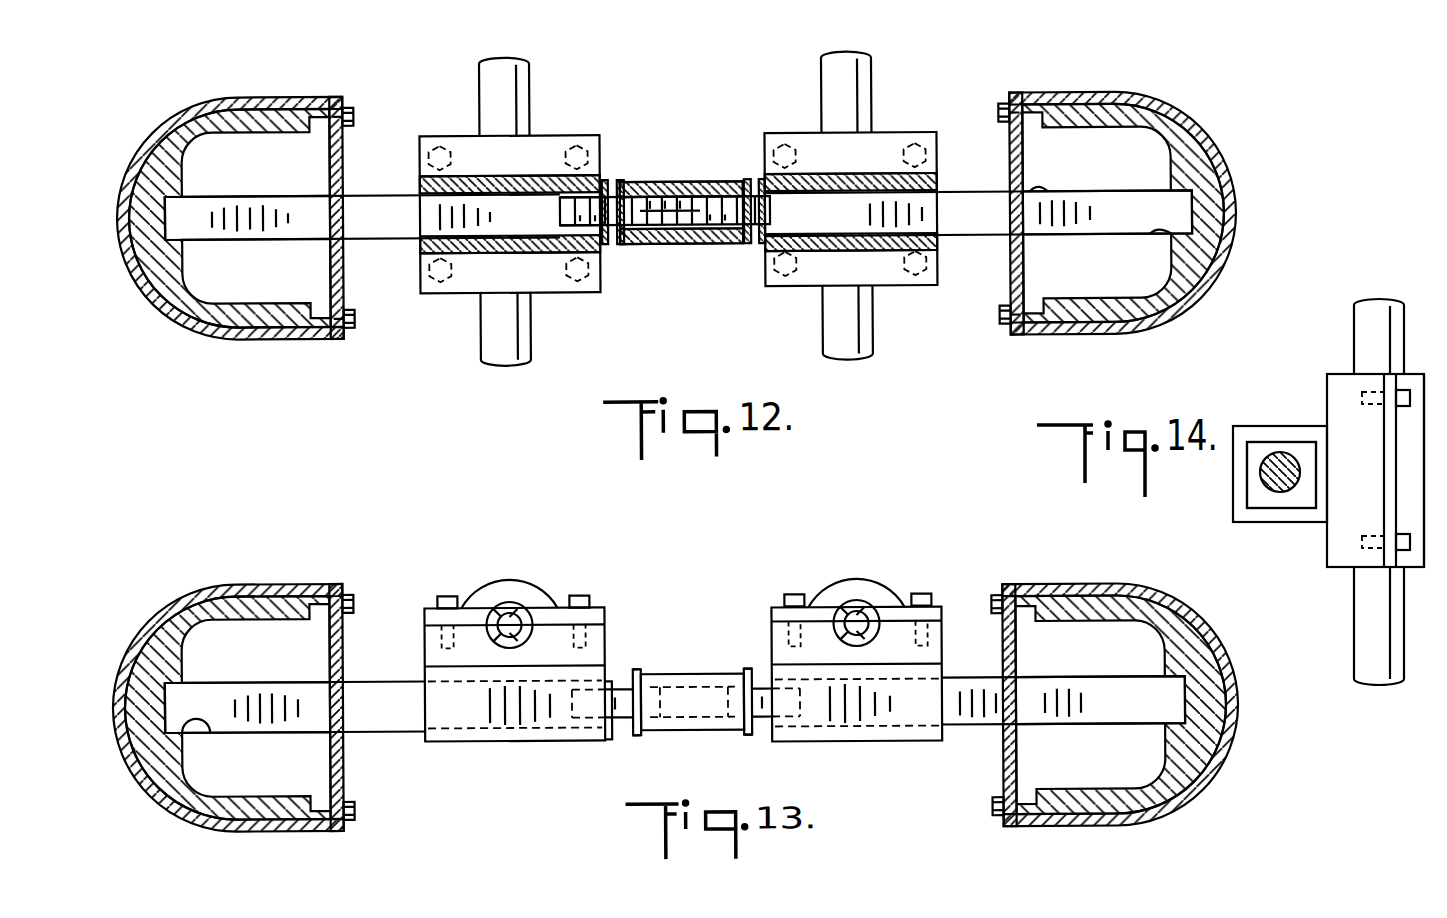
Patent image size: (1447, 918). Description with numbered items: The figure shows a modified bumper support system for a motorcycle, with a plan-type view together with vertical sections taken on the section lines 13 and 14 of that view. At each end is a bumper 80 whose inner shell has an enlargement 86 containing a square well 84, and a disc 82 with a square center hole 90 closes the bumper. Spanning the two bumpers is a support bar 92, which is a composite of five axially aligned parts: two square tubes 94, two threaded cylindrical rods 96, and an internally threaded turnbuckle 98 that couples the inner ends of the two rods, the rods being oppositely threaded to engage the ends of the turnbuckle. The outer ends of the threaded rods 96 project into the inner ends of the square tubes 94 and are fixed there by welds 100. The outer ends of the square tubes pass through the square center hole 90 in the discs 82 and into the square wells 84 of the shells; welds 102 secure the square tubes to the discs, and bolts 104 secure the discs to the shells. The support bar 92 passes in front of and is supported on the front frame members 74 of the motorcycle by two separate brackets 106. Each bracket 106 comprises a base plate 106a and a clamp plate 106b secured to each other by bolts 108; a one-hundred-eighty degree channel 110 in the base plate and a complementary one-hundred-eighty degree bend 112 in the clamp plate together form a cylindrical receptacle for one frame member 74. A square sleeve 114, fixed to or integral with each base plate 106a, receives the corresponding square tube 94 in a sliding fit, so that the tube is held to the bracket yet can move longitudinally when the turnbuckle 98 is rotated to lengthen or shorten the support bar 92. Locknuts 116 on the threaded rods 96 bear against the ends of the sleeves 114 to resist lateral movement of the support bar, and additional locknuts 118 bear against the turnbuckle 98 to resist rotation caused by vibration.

In FIG. 12, the section line 13— 13 is at (85, 258).
In FIG. 12, the section line 14— 14 is at (600, 65).
In FIG. 12, the front frame members 74 is at (487, 87).
In FIG. 13, the front frame members 74 is at (516, 626).
In FIG. 14, the front frame members 74 is at (1379, 492).
In FIG. 12, the bumpers 80 is at (1163, 320).
In FIG. 13, the bumpers 80 is at (158, 616).
In FIG. 12, the discs 82 is at (1006, 145).
In FIG. 12, the well 84 is at (1152, 241).
In FIG. 13, the well 84 is at (216, 724).
In FIG. 12, the enlargement 86 is at (1205, 267).
In FIG. 12, the center hole 90 is at (1040, 203).
In FIG. 12, the support bar 92 is at (982, 253).
In FIG. 13, the support bar 92 is at (965, 742).
In FIG. 12, the square tubes 94 is at (978, 205).
In FIG. 13, the square tubes 94 is at (372, 736).
In FIG. 14, the square tubes 94 is at (1242, 480).
In FIG. 12, the threaded cylindrical rods 96 is at (566, 217).
In FIG. 13, the threaded cylindrical rods 96 is at (622, 693).
In FIG. 14, the threaded cylindrical rods 96 is at (1283, 458).
In FIG. 12, the turnbuckle 98 is at (688, 188).
In FIG. 13, the turnbuckle 98 is at (690, 680).
In FIG. 12, the welds 100 is at (601, 244).
In FIG. 12, the welds 102 is at (345, 193).
In FIG. 13, the welds 102 is at (1020, 657).
In FIG. 12, the bolts 104 is at (347, 308).
In FIG. 12, the brackets 106 is at (598, 140).
In FIG. 14, the brackets 106 is at (1317, 374).
In FIG. 14, the base plate 106a is at (1330, 556).
In FIG. 14, the clamp plate 106b is at (1424, 567).
In FIG. 12, the bolts 108 is at (575, 263).
In FIG. 13, the bolts 108 is at (448, 600).
In FIG. 14, the bolts 108 is at (1405, 380).
In FIG. 13, the channel 110 is at (882, 636).
In FIG. 13, the bend 112 is at (862, 589).
In FIG. 12, the square sleeve 114 is at (467, 178).
In FIG. 13, the square sleeve 114 is at (503, 745).
In FIG. 14, the square sleeve 114 is at (1236, 512).
In FIG. 12, the locknuts 116 is at (608, 188).
In FIG. 13, the locknuts 116 is at (615, 747).
In FIG. 12, the additional locknuts 118 is at (624, 188).
In FIG. 13, the additional locknuts 118 is at (745, 738).